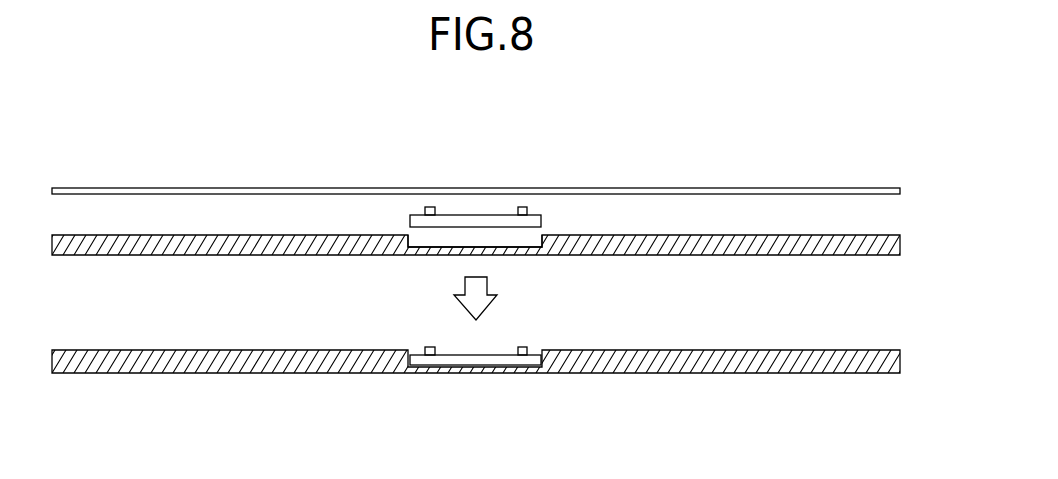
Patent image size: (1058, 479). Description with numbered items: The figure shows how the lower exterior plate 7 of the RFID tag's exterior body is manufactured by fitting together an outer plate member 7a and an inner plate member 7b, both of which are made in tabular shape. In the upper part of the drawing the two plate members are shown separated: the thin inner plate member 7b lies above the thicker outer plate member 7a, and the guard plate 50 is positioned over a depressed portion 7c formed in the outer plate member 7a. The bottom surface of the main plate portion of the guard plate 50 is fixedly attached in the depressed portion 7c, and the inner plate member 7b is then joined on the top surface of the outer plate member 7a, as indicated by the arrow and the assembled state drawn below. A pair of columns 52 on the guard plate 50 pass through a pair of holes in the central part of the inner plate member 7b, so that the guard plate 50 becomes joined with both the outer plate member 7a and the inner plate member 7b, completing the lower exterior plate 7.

The lower exterior plate 7 is at (77, 380).
The outer plate member 7a is at (83, 255).
The inner plate member 7b is at (72, 188).
The depressed portion 7c is at (540, 235).
The guard plate 50 is at (537, 213).
The columns 52 is at (432, 207).